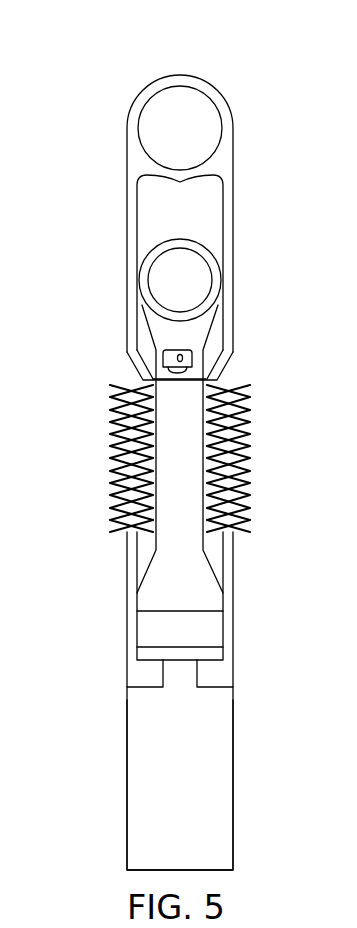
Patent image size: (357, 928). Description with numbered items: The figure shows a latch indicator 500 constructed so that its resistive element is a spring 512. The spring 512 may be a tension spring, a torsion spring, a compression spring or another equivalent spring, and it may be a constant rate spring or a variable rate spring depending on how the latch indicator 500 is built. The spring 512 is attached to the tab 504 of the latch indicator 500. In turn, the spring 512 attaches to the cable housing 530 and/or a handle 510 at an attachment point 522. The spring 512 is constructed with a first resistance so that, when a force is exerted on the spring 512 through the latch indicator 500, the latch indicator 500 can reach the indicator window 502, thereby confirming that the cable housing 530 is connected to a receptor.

The latch indicator 500 is at (197, 33).
The tab 504 is at (127, 137).
The handle 510 is at (149, 249).
The indicator window 502 is at (170, 358).
The spring 512 is at (110, 505).
The attachment point 522 is at (143, 630).
The cable housing 530 is at (135, 775).